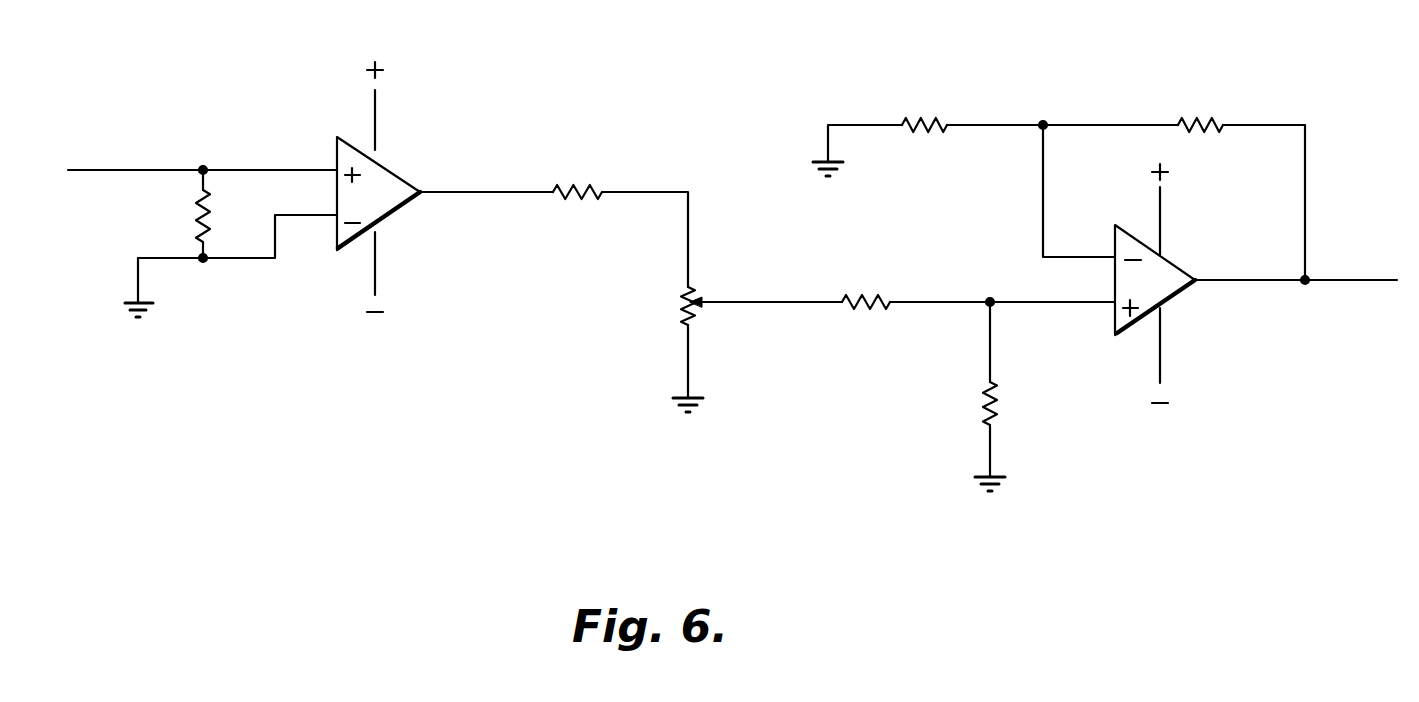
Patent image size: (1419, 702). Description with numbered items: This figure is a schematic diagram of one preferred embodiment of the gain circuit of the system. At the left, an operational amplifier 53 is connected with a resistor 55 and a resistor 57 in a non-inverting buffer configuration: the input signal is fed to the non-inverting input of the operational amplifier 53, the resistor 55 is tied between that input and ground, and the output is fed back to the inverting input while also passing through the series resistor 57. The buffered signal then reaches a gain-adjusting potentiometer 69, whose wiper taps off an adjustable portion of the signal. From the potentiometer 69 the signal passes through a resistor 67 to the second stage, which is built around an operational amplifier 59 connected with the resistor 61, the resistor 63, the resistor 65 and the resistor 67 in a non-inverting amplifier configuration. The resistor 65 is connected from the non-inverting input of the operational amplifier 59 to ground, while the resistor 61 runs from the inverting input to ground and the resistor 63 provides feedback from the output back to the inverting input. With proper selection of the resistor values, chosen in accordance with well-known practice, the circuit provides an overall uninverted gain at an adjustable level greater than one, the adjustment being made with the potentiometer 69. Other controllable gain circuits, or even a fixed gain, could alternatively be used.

The operational amplifier 53 is at (393, 203).
The resistor 55 is at (198, 220).
The resistor 57 is at (572, 183).
The operational amplifier 59 is at (1178, 296).
The resistor 61 is at (915, 120).
The resistor 63 is at (1195, 120).
The resistor 65 is at (1000, 400).
The resistor 67 is at (876, 300).
The gain-adjusting potentiometer 69 is at (698, 308).